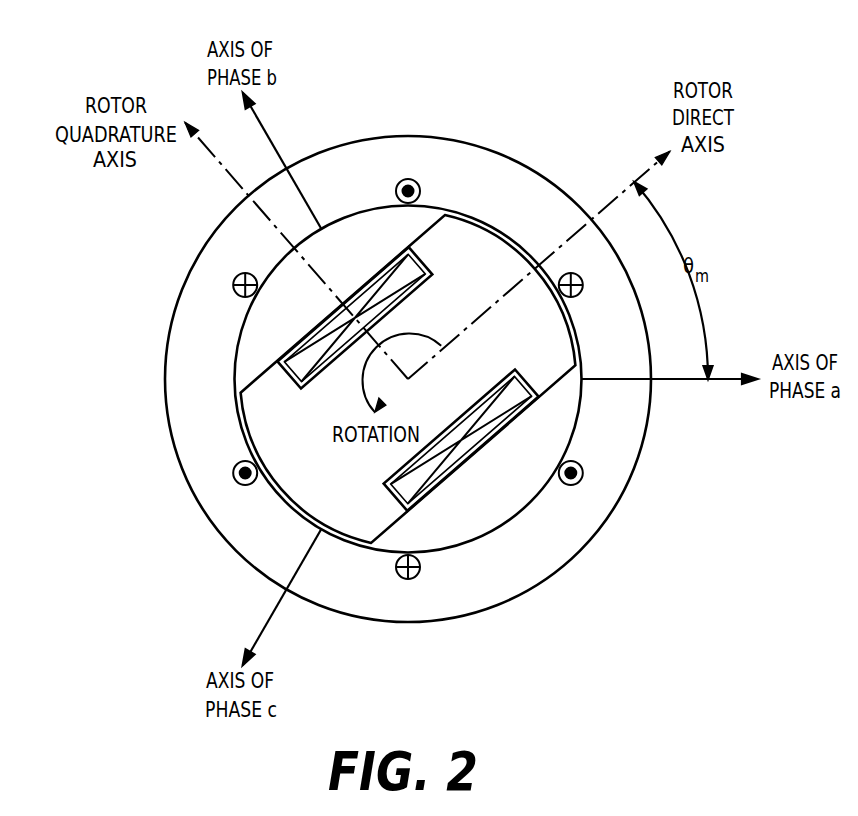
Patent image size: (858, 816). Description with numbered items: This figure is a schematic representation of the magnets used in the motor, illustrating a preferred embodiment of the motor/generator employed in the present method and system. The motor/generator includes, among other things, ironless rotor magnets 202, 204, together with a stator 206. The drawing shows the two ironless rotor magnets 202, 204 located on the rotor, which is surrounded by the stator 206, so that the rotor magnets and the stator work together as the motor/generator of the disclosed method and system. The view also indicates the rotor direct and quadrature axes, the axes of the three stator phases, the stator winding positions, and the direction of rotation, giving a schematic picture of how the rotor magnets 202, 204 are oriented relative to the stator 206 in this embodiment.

The rotor magnet 202 is at (285, 345).
The rotor magnet 204 is at (522, 432).
The stator 206 is at (565, 497).